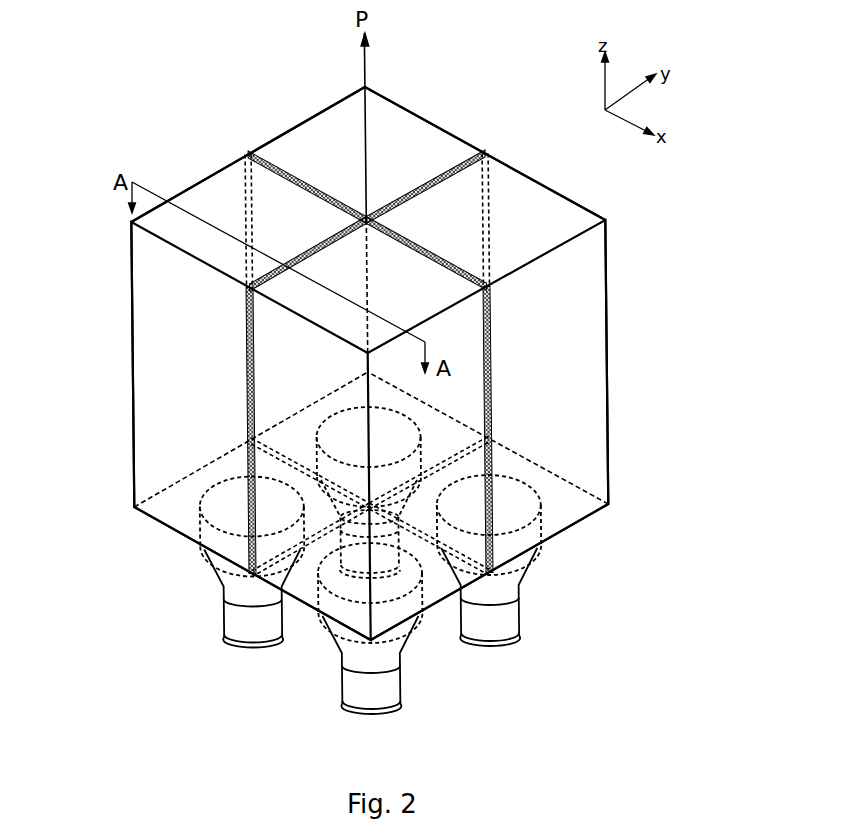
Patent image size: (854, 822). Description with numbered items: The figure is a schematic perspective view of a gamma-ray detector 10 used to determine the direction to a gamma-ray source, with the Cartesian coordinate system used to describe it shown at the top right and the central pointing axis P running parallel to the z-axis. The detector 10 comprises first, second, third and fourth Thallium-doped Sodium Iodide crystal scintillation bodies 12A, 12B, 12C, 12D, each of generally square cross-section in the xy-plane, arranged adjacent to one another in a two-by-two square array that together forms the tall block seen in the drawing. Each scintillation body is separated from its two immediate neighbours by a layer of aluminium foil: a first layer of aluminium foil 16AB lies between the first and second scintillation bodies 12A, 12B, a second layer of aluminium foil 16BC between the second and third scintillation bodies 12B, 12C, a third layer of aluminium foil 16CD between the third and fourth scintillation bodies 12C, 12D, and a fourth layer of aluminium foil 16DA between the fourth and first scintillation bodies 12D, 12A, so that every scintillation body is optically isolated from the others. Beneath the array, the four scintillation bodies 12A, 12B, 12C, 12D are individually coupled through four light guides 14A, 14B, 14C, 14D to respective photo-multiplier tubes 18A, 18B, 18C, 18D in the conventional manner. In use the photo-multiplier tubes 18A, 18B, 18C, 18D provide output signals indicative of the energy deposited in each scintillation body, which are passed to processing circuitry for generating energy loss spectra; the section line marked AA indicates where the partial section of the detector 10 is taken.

The gamma-ray detector 10 is at (677, 313).
The first scintillation body 12A is at (130, 223).
The second scintillation body 12B is at (386, 100).
The third scintillation body 12C is at (608, 221).
The fourth scintillation body 12D is at (442, 316).
The light guide 14A is at (201, 524).
The light guide 14B is at (333, 416).
The light guide 14C is at (544, 519).
The light guide 14D is at (426, 605).
The first layer of aluminium foil 16AB is at (262, 158).
The second layer of aluminium foil 16BC is at (468, 144).
The third layer of aluminium foil 16CD is at (470, 275).
The fourth layer of aluminium foil 16DA is at (250, 284).
The photo-multiplier tube 18A is at (224, 607).
The photo-multiplier tube 18B is at (343, 537).
The photo-multiplier tube 18C is at (522, 633).
The photo-multiplier tube 18D is at (389, 712).